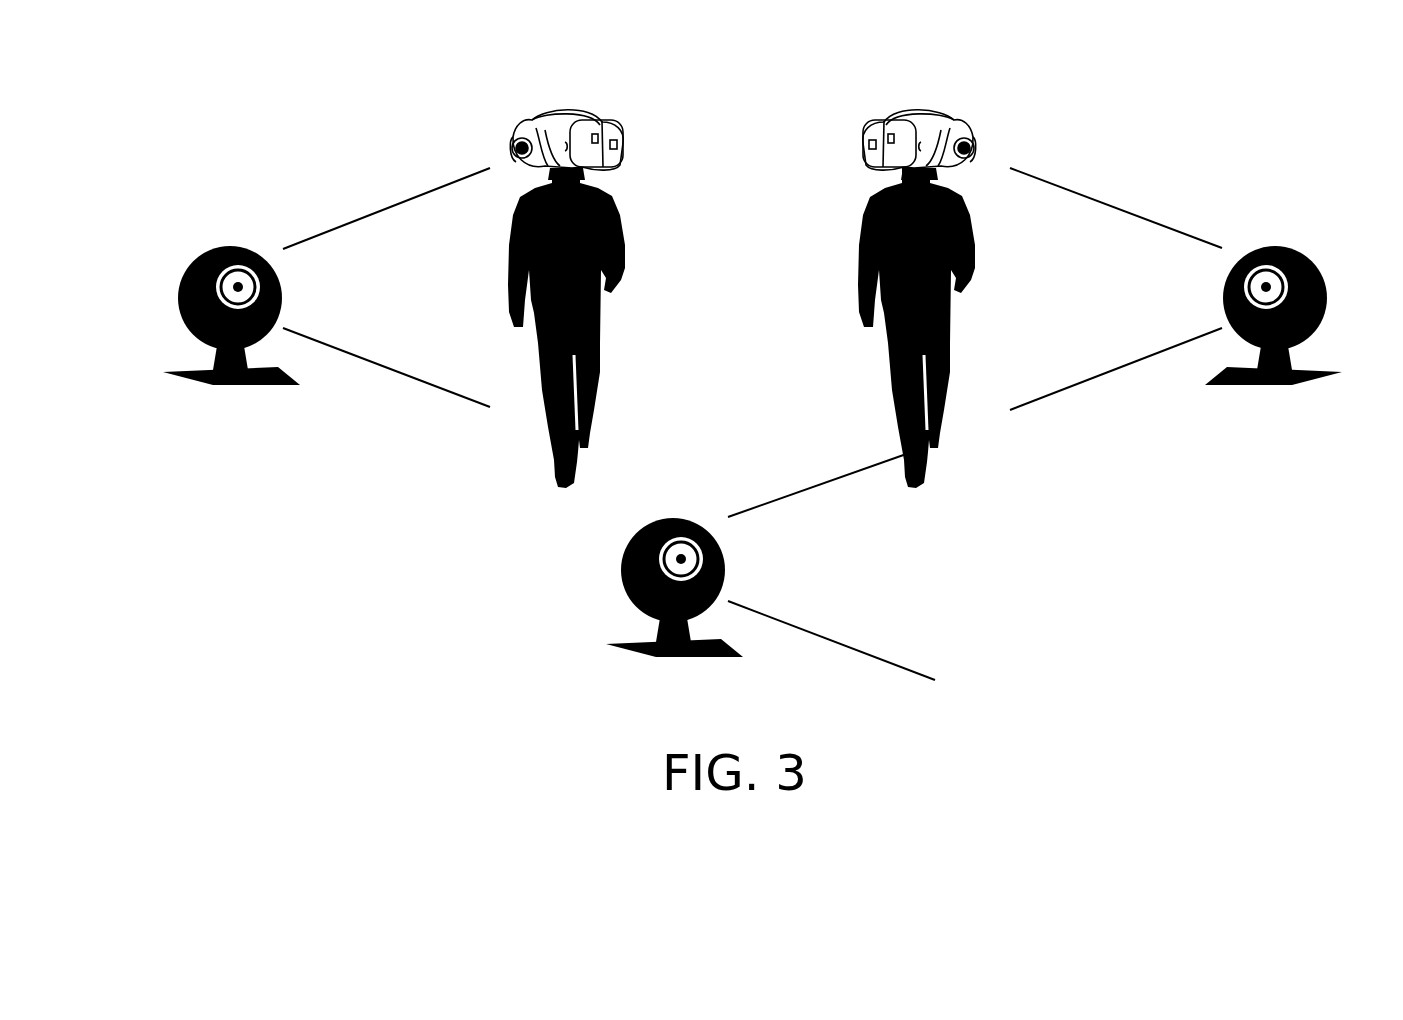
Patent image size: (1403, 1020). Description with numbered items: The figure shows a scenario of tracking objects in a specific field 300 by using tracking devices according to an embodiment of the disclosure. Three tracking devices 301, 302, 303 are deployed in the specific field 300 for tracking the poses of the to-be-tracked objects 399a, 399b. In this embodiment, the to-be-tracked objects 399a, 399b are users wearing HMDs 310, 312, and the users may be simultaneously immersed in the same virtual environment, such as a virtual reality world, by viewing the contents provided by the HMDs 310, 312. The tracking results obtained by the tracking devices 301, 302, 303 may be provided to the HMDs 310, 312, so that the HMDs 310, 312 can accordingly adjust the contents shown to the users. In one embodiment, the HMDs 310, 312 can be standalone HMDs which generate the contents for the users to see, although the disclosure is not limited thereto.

The specific field 300 is at (145, 693).
The tracking device 301 is at (185, 375).
The tracking device 302 is at (1322, 283).
The tracking device 303 is at (645, 650).
The HMD 310 is at (543, 115).
The HMD 312 is at (944, 114).
The to-be-tracked object 399a is at (550, 432).
The to-be-tracked object 399b is at (900, 403).